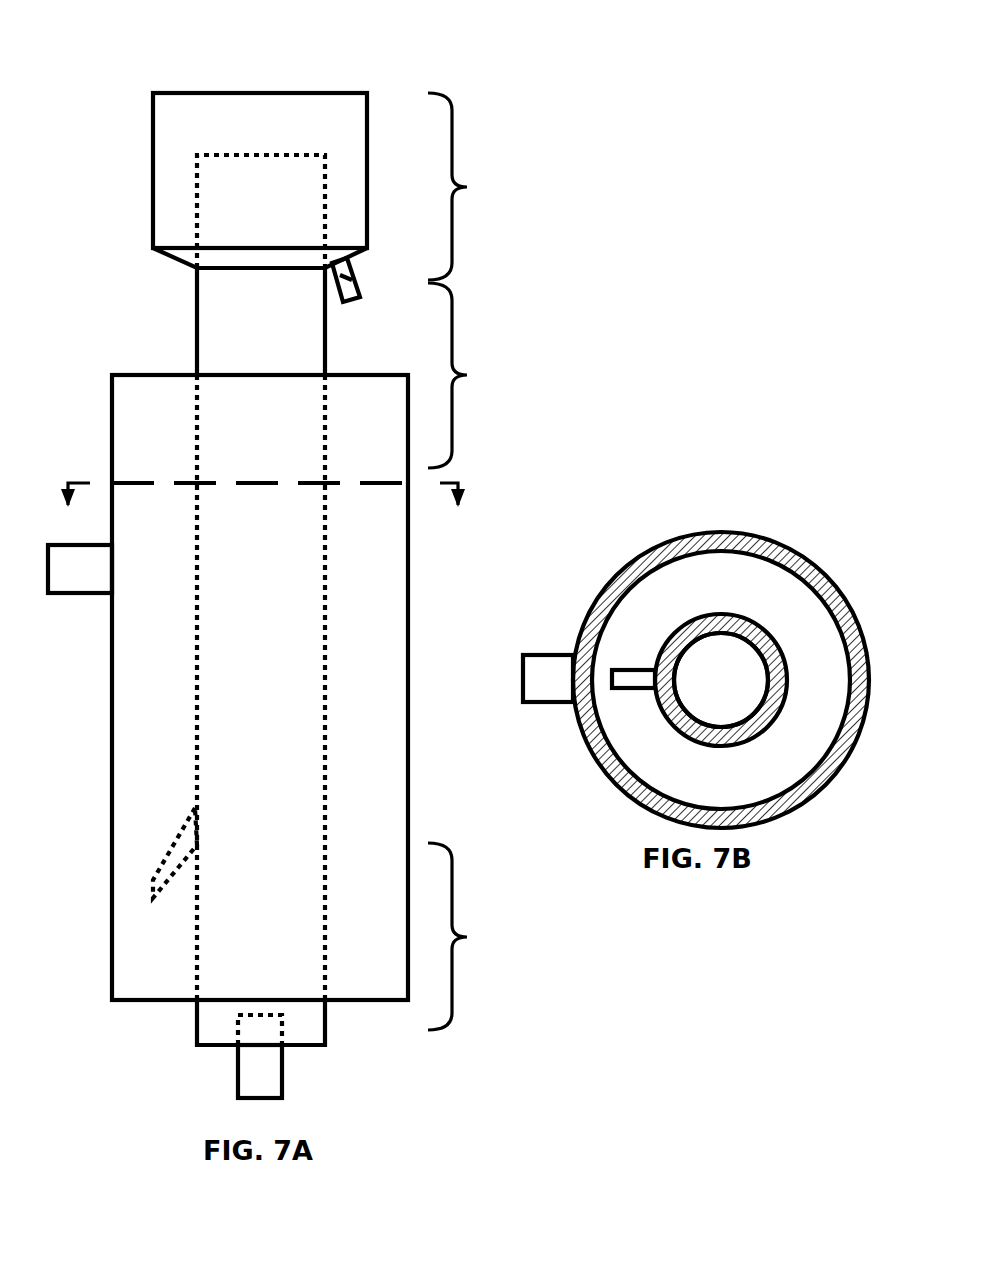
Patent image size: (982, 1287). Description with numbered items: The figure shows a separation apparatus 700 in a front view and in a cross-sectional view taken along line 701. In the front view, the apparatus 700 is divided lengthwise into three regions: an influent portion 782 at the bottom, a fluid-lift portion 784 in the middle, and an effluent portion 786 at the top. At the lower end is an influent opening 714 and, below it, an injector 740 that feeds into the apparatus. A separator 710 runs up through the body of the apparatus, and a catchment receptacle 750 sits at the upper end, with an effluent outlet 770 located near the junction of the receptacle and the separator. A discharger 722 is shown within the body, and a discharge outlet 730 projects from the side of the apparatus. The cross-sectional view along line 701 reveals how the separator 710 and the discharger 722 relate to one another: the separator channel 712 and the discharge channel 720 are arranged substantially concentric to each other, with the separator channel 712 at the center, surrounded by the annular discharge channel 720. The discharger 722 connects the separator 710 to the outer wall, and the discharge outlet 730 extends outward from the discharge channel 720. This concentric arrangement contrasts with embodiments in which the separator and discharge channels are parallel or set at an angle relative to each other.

In FIG. 7A, the apparatus 700 is at (96, 61).
In FIG. 7A, the line 701 is at (574, 509).
In FIG. 7A, the separator 710 is at (197, 351).
In FIG. 7B, the separator 710 is at (684, 633).
In FIG. 7B, the separator channel 712 is at (703, 693).
In FIG. 7A, the influent opening 714 is at (207, 1047).
In FIG. 7B, the discharge channel 720 is at (700, 598).
In FIG. 7A, the discharger 722 is at (176, 852).
In FIG. 7B, the discharger 722 is at (633, 680).
In FIG. 7A, the discharge outlet 730 is at (62, 588).
In FIG. 7B, the discharge outlet 730 is at (562, 672).
In FIG. 7A, the injector 740 is at (270, 1062).
In FIG. 7A, the catchment receptacle 750 is at (167, 182).
In FIG. 7A, the effluent outlet 770 is at (354, 279).
In FIG. 7A, the influent portion 782 is at (473, 936).
In FIG. 7A, the fluid-lift portion 784 is at (473, 375).
In FIG. 7A, the effluent portion 786 is at (473, 186).